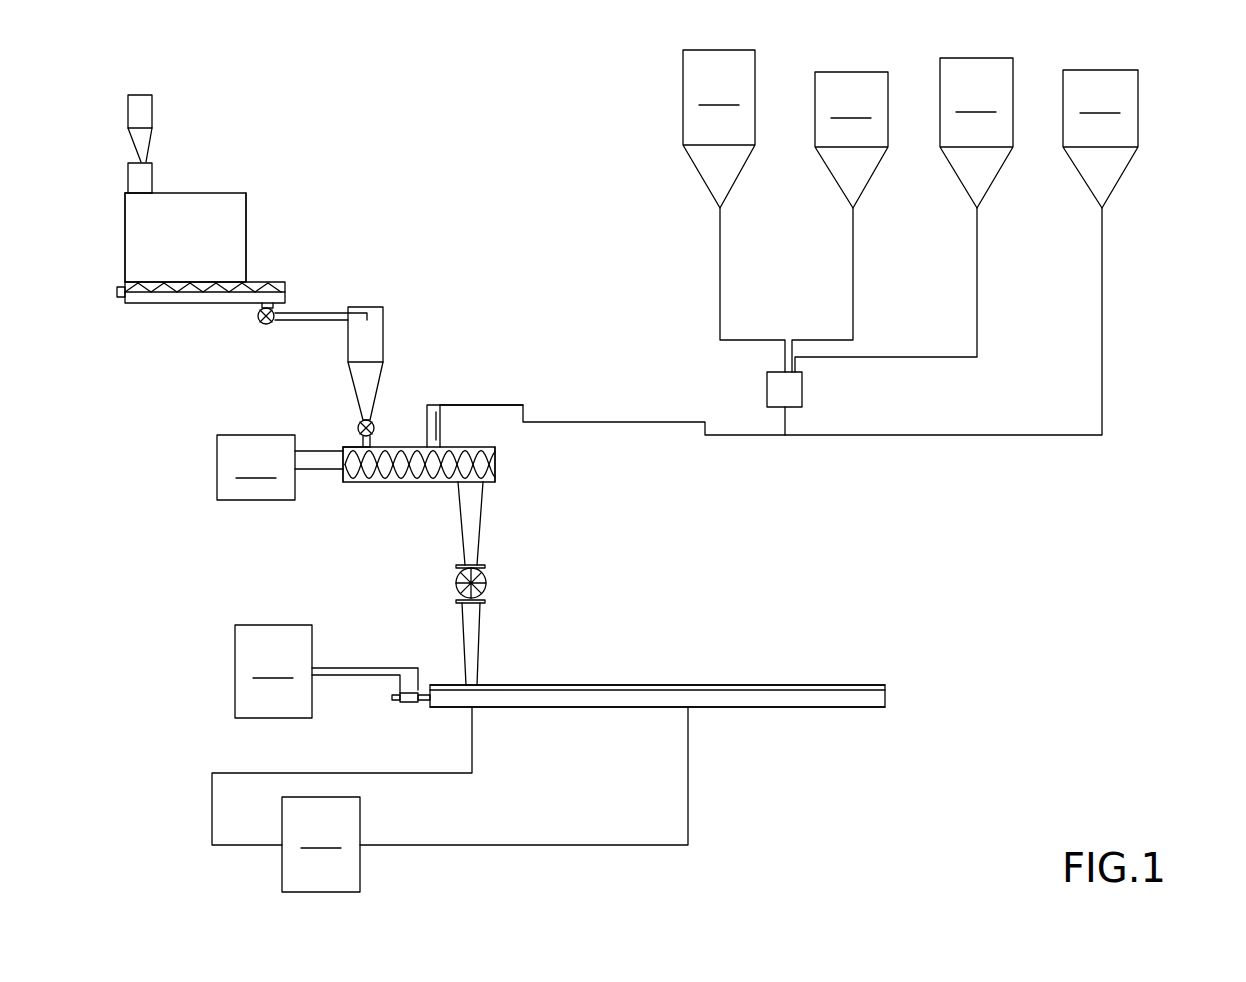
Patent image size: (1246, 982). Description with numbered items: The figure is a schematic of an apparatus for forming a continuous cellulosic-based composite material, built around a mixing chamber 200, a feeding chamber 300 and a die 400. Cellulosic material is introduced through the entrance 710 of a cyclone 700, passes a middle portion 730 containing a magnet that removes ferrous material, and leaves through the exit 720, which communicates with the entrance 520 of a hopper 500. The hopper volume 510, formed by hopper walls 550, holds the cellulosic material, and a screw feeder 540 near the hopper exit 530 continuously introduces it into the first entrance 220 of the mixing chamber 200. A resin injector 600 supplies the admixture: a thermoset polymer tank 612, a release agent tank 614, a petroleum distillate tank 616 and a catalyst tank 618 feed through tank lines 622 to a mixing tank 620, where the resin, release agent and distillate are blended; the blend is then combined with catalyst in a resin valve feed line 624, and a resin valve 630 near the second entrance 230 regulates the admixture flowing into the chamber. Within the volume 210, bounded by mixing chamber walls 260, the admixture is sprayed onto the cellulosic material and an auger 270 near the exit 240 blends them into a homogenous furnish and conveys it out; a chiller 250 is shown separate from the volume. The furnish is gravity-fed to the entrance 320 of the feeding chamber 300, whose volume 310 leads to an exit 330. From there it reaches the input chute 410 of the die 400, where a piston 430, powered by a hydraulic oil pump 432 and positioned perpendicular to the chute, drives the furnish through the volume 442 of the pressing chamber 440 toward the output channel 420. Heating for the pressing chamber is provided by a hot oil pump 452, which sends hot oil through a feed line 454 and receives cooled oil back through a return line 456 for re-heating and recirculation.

The mixing chamber 200 is at (406, 458).
The volume 210 is at (493, 460).
The first entrance 220 is at (343, 447).
The second entrance 230 is at (431, 405).
The exit 240 is at (467, 485).
The chiller 250 is at (280, 467).
The mixing chamber walls 260 is at (462, 447).
The auger 270 is at (404, 455).
The feeding chamber 300 is at (469, 581).
The volume 310 is at (458, 596).
The entrance 320 is at (481, 565).
The exit 330 is at (482, 604).
The die 400 is at (588, 714).
The input chute 410 is at (474, 640).
The output channel 420 is at (886, 688).
The piston 430 is at (405, 702).
The hydraulic oil pump 432 is at (326, 671).
The pressing chamber 440 is at (855, 700).
The volume 442 is at (778, 686).
The hot oil pump 452 is at (321, 844).
The feed line 454 is at (553, 845).
The return line 456 is at (370, 773).
The hopper 500 is at (267, 289).
The volume 510 is at (243, 212).
The entrance 520 is at (138, 200).
The exit 530 is at (373, 382).
The screw feeder 540 is at (286, 283).
The hopper walls 550 is at (232, 193).
The resin injector 600 is at (839, 242).
The thermoset polymer tank 612 is at (719, 129).
The release agent tank 614 is at (851, 140).
The petroleum distillate tank 616 is at (976, 133).
The catalyst tank 618 is at (1100, 139).
The mixing tank 620 is at (805, 393).
The tank lines 622 is at (722, 285).
The resin valve feed line 624 is at (657, 422).
The resin valve 630 is at (441, 420).
The cyclone 700 is at (209, 124).
The entrance 710 is at (146, 93).
The exit 720 is at (143, 157).
The middle portion 730 is at (152, 120).